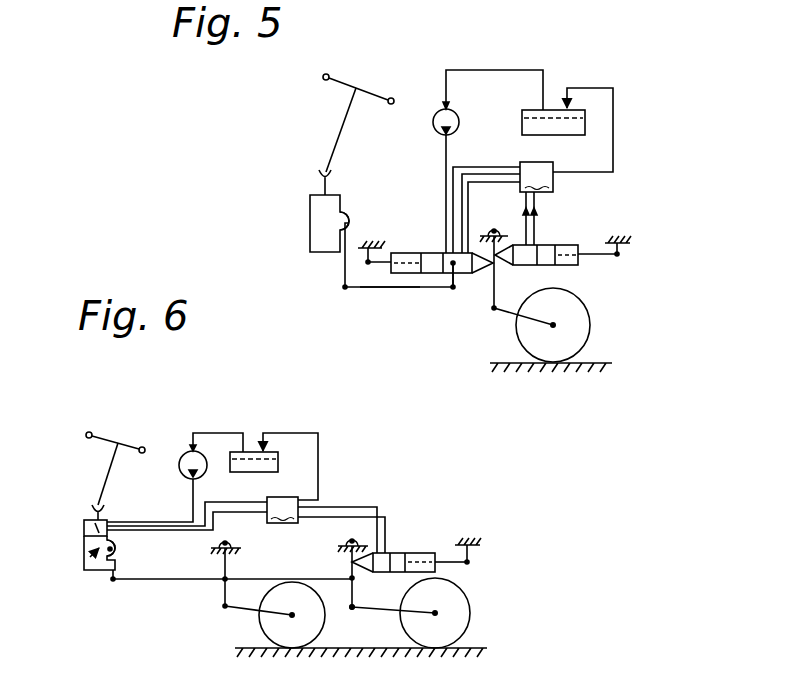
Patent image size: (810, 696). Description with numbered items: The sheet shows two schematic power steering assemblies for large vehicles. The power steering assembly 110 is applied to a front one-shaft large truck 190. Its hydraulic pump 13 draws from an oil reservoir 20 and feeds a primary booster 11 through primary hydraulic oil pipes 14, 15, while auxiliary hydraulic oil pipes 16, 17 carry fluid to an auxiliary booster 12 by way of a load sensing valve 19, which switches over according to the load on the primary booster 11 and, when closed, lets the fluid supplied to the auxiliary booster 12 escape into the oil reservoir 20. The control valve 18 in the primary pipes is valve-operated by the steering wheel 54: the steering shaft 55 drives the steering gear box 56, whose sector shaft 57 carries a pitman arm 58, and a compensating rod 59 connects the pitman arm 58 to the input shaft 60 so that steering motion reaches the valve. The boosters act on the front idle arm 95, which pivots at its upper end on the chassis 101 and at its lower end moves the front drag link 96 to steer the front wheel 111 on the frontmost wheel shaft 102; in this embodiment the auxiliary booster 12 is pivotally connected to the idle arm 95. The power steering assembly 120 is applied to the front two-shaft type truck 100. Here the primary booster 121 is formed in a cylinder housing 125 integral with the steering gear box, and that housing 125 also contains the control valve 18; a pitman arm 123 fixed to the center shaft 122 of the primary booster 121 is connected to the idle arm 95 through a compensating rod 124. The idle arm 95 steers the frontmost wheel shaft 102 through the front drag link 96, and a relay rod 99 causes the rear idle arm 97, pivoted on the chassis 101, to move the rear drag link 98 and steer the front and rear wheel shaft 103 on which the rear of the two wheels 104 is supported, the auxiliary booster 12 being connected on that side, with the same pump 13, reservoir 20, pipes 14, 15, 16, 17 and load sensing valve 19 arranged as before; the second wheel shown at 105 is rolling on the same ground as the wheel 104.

In FIG. 5, the primary booster 11 is at (411, 251).
In FIG. 5, the auxiliary booster 12 is at (556, 245).
In FIG. 6, the auxiliary booster 12 is at (401, 551).
In FIG. 5, the hydraulic pump 13 is at (458, 111).
In FIG. 6, the hydraulic pump 13 is at (187, 455).
In FIG. 5, the primary hydraulic oil pipe 14 is at (445, 176).
In FIG. 6, the primary hydraulic oil pipe 14 is at (188, 495).
In FIG. 5, the primary hydraulic oil pipe 15 is at (469, 160).
In FIG. 6, the primary hydraulic oil pipe 15 is at (324, 440).
In FIG. 5, the auxiliary hydraulic oil pipe 16 is at (481, 171).
In FIG. 6, the auxiliary hydraulic oil pipe 16 is at (224, 510).
In FIG. 5, the auxiliary hydraulic oil pipe 17 is at (494, 180).
In FIG. 6, the auxiliary hydraulic oil pipe 17 is at (239, 519).
In FIG. 5, the control valve 18 is at (465, 276).
In FIG. 6, the control valve 18 is at (88, 518).
In FIG. 5, the load sensing valve 19 is at (566, 140).
In FIG. 6, the load sensing valve 19 is at (282, 510).
In FIG. 5, the oil reservoir 20 is at (590, 118).
In FIG. 6, the oil reservoir 20 is at (281, 452).
In FIG. 5, the steering wheel 54 is at (352, 85).
In FIG. 6, the steering wheel 54 is at (116, 423).
In FIG. 5, the steering shaft 55 is at (338, 140).
In FIG. 6, the steering shaft 55 is at (102, 472).
In FIG. 5, the steering gear box 56 is at (310, 243).
In FIG. 5, the sector shaft 57 is at (349, 214).
In FIG. 5, the pitman arm 58 is at (345, 288).
In FIG. 5, the compensating rod 59 is at (380, 288).
In FIG. 5, the input shaft 60 is at (450, 282).
In FIG. 5, the front idle arm 95 is at (490, 296).
In FIG. 6, the front idle arm 95 is at (230, 563).
In FIG. 5, the front drag link 96 is at (503, 311).
In FIG. 6, the front drag link 96 is at (231, 610).
In FIG. 6, the rear idle arm 97 is at (352, 608).
In FIG. 6, the rear drag link 98 is at (406, 610).
In FIG. 6, the relay rod 99 is at (300, 579).
In FIG. 6, the truck 100 is at (453, 525).
In FIG. 5, the chassis 101 is at (372, 241).
In FIG. 6, the chassis 101 is at (214, 551).
In FIG. 5, the frontmost wheel shaft 102 is at (553, 325).
In FIG. 6, the frontmost wheel shaft 102 is at (285, 640).
In FIG. 6, the front and rear wheel shaft 103 is at (435, 612).
In FIG. 6, the wheel 104 is at (320, 650).
In FIG. 6, the wheel 105 is at (470, 613).
In FIG. 5, the power steering assembly 110 is at (478, 40).
In FIG. 5, the front wheel 111 is at (590, 330).
In FIG. 6, the power steering assembly 120 is at (246, 392).
In FIG. 6, the primary booster 121 is at (84, 560).
In FIG. 6, the center shaft 122 is at (118, 551).
In FIG. 6, the pitman arm 123 is at (112, 581).
In FIG. 6, the compensating rod 124 is at (158, 581).
In FIG. 6, the cylinder housing 125 is at (84, 551).
In FIG. 5, the front one-shaft large truck 190 is at (679, 219).